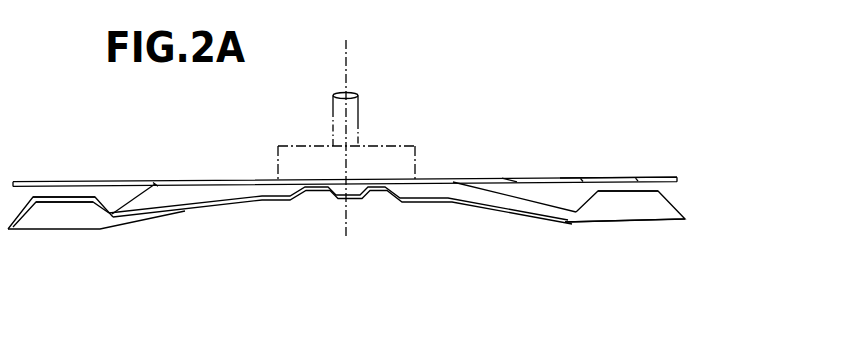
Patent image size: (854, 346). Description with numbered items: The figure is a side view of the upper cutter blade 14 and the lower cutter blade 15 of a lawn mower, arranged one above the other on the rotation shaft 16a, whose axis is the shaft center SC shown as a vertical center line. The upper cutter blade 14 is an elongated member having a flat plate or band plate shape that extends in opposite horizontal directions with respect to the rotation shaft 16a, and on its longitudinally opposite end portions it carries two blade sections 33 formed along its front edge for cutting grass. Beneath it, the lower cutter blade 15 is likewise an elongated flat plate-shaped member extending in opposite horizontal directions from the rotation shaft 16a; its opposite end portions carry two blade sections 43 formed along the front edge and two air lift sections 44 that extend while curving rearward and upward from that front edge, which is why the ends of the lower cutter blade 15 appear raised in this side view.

The upper cutter blade 14 is at (43, 182).
The lower cutter blade 15 is at (100, 232).
The rotation shaft 16a is at (358, 122).
The blade section 33 is at (610, 177).
The blade section 43 is at (646, 221).
The air lift section 44 is at (50, 220).
The shaft center SC is at (346, 55).